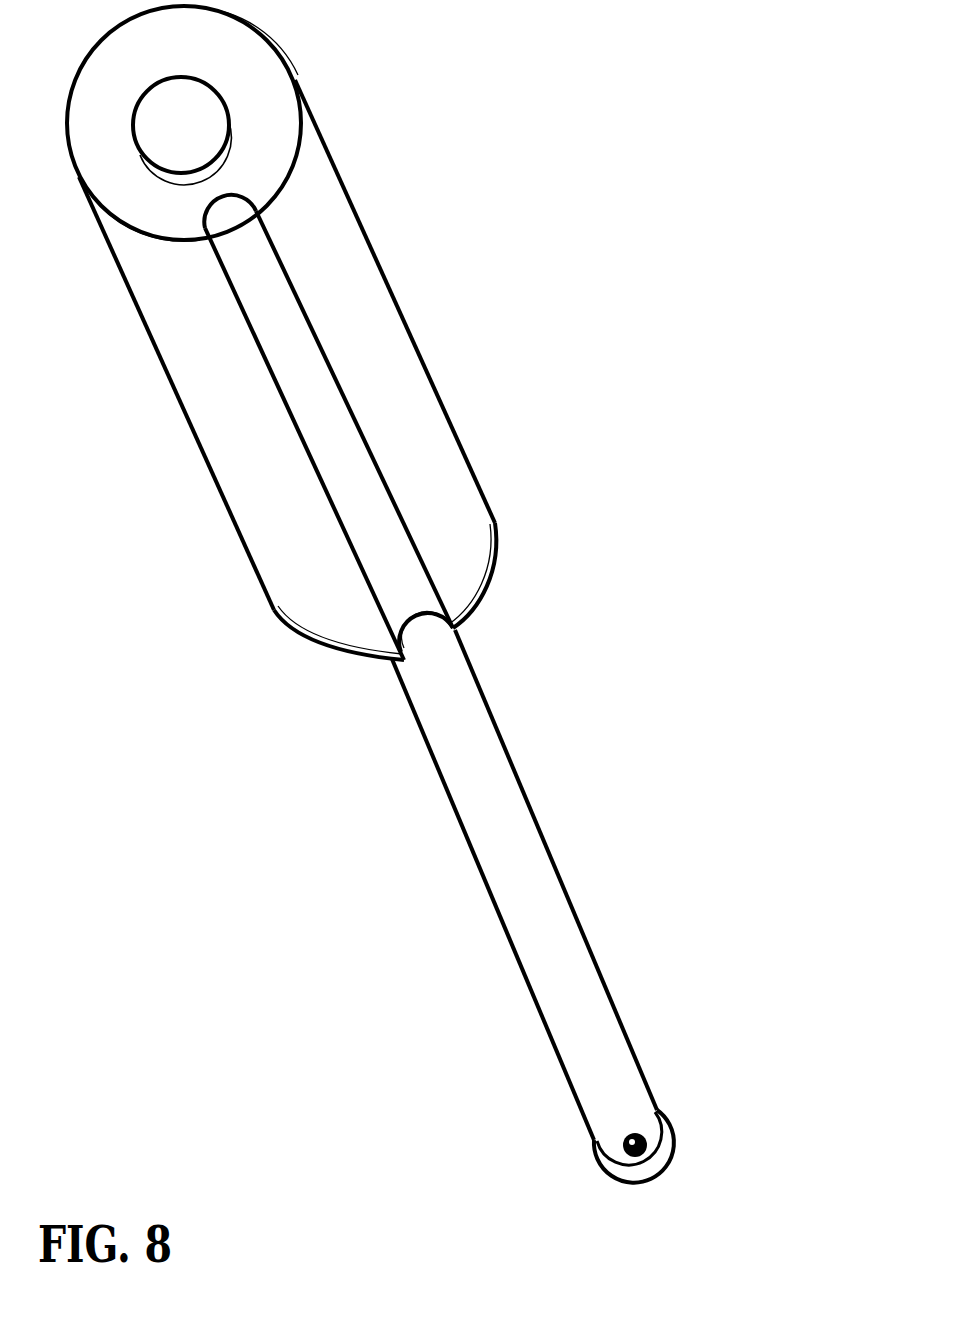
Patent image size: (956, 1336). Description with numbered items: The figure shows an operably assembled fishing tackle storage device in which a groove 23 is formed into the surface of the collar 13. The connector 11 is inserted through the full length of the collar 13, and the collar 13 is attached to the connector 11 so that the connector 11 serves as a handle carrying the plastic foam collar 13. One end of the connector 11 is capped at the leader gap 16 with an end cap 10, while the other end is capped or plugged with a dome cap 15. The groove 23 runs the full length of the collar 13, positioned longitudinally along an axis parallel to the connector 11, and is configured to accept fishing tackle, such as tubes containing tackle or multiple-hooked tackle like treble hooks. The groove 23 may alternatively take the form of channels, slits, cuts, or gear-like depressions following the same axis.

The end cap 10 is at (653, 1160).
The connector 11 is at (540, 926).
The collar 13 is at (437, 453).
The dome cap 15 is at (177, 100).
The leader gap 16 is at (629, 1133).
The groove 23 is at (253, 275).